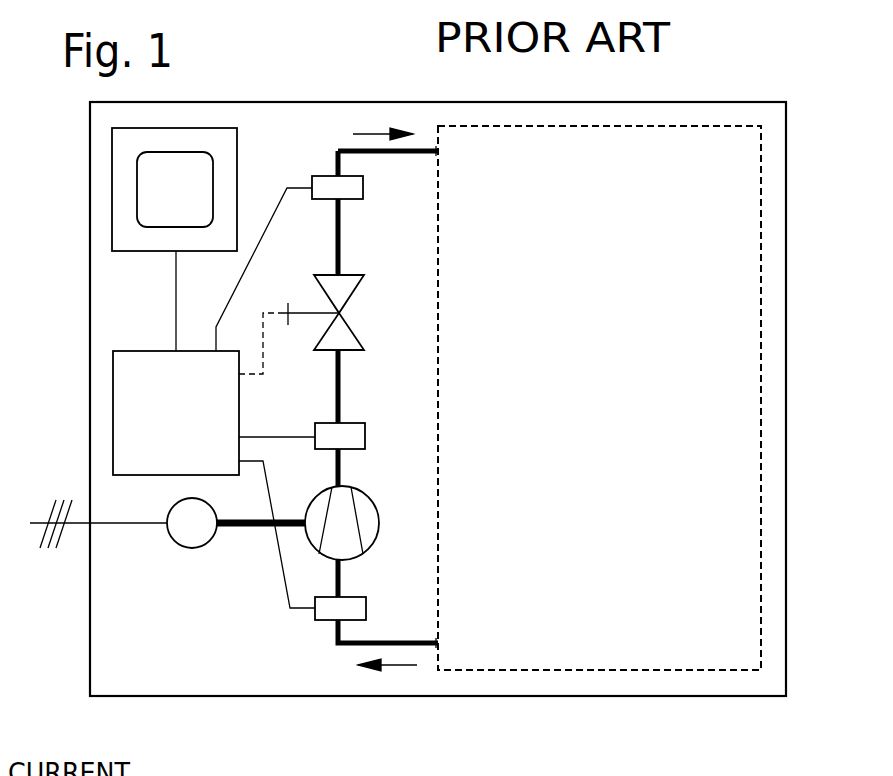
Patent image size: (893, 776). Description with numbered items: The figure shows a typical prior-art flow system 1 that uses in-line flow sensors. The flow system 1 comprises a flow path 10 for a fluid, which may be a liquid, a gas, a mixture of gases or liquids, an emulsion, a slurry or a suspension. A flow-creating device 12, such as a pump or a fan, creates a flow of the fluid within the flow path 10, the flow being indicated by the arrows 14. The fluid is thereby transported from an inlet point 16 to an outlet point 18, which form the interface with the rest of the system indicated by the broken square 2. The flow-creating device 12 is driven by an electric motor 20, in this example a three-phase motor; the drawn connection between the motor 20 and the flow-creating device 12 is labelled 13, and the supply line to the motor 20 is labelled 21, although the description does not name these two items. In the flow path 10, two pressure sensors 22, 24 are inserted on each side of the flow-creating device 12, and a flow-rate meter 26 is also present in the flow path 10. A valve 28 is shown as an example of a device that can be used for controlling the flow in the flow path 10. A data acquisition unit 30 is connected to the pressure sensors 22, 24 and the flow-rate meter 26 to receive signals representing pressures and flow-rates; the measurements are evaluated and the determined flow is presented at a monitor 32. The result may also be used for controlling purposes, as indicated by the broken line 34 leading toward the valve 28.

The flow system 1 is at (607, 697).
The broken square 2 is at (705, 670).
The flow path 10 is at (340, 218).
The flow-creating device 12 is at (345, 548).
The drive shaft 13 is at (237, 528).
The arrows 14 is at (352, 134).
The inlet point 16 is at (440, 643).
The outlet point 18 is at (440, 152).
The electric motor 20 is at (193, 545).
The power supply line 21 is at (115, 525).
The pressure sensor 22 is at (320, 620).
The pressure sensor 24 is at (352, 440).
The flow-rate meter 26 is at (358, 189).
The valve 28 is at (350, 340).
The data acquisition unit 30 is at (113, 385).
The monitor 32 is at (135, 251).
The broken line 34 is at (265, 345).